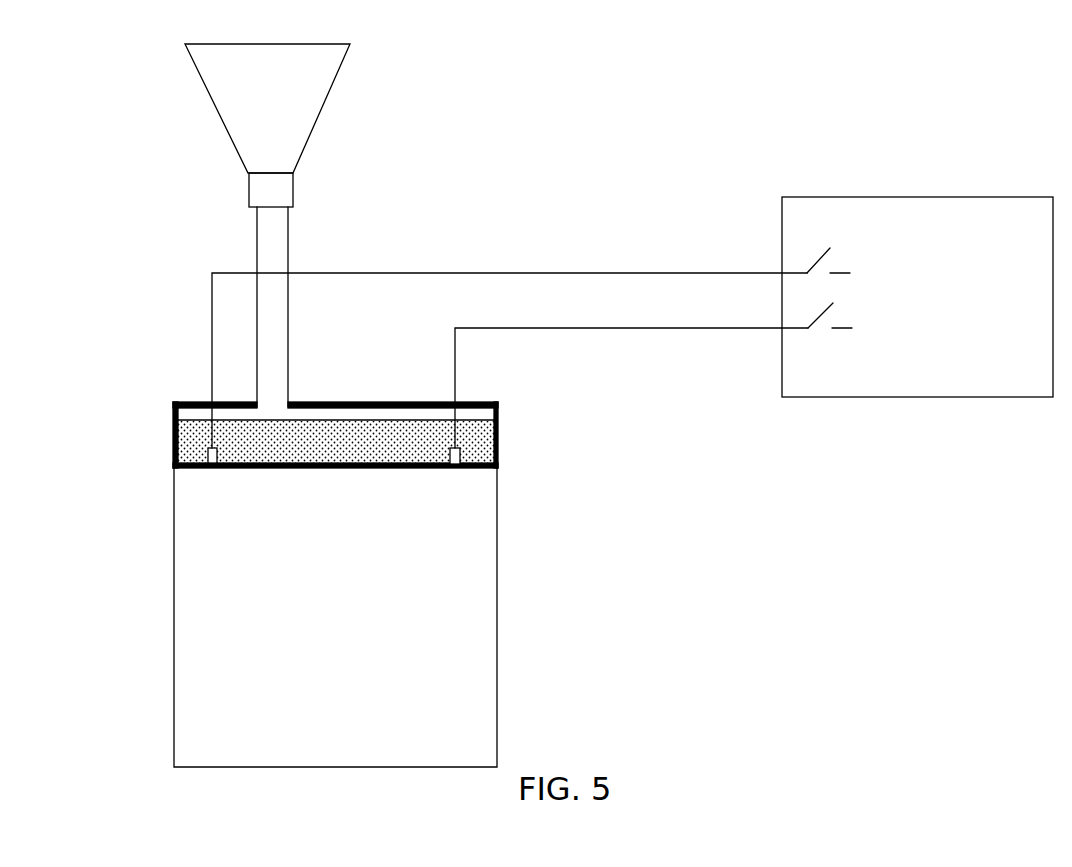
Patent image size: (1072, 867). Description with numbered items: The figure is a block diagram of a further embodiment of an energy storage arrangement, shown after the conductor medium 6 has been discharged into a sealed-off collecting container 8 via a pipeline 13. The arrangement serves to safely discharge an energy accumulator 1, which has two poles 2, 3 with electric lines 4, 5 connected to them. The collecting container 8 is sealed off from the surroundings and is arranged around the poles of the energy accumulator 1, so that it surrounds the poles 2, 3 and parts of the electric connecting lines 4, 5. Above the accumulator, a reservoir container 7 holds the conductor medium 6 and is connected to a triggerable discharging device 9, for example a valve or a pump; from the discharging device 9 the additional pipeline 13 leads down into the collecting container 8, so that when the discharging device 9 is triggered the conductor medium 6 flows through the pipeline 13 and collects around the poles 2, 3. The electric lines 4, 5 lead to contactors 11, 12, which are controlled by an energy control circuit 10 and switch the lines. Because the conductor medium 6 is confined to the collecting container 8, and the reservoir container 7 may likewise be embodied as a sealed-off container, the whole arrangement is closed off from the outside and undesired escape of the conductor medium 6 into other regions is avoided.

The energy accumulator 1 is at (463, 613).
The pole 2 is at (209, 448).
The pole 3 is at (457, 448).
The electric line 4 is at (509, 341).
The electric line 5 is at (631, 387).
The conductor medium 6 is at (313, 437).
The reservoir container 7 is at (193, 65).
The collecting container 8 is at (174, 425).
The discharging device 9 is at (255, 182).
The energy control circuit 10 is at (948, 225).
The contactor 11 is at (825, 239).
The contactor 12 is at (827, 338).
The pipeline 13 is at (277, 252).